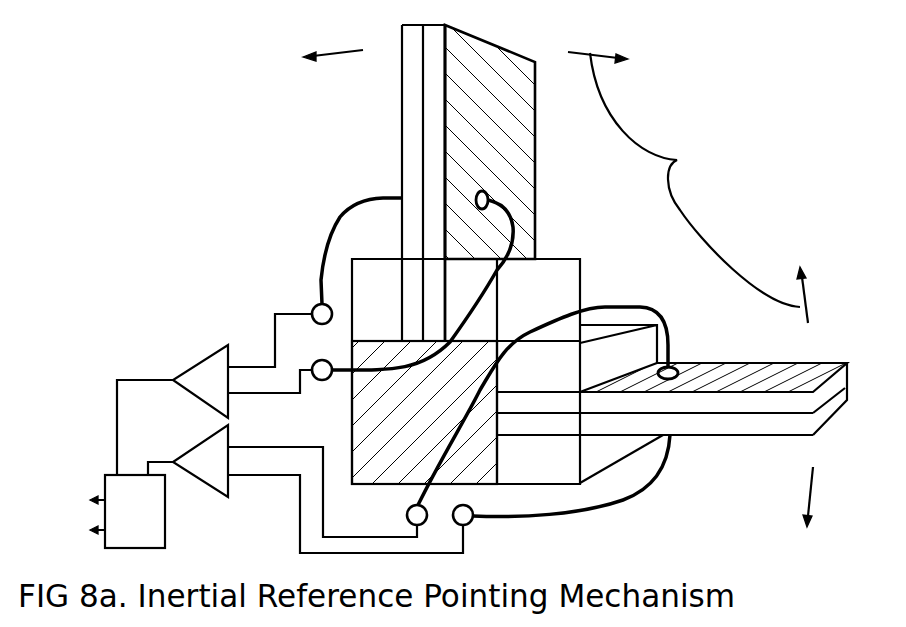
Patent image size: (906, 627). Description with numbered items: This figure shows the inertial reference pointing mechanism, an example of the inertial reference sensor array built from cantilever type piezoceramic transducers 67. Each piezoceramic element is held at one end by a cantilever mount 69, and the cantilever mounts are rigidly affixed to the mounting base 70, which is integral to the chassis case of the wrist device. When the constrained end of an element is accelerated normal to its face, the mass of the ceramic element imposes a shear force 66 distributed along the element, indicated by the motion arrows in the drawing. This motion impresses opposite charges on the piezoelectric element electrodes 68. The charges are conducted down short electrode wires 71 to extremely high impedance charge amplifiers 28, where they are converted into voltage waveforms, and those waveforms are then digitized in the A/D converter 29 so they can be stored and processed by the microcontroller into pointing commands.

The charge amplifiers 28 is at (200, 437).
The A/D converter 29 is at (150, 511).
The shear force 66 is at (558, 288).
The cantilever type piezoceramic transducers 67 is at (413, 153).
The piezoelectric element electrodes 68 is at (402, 93).
The cantilever mount 69 is at (553, 290).
The mounting base 70 is at (400, 437).
The electrode wires 71 is at (350, 201).